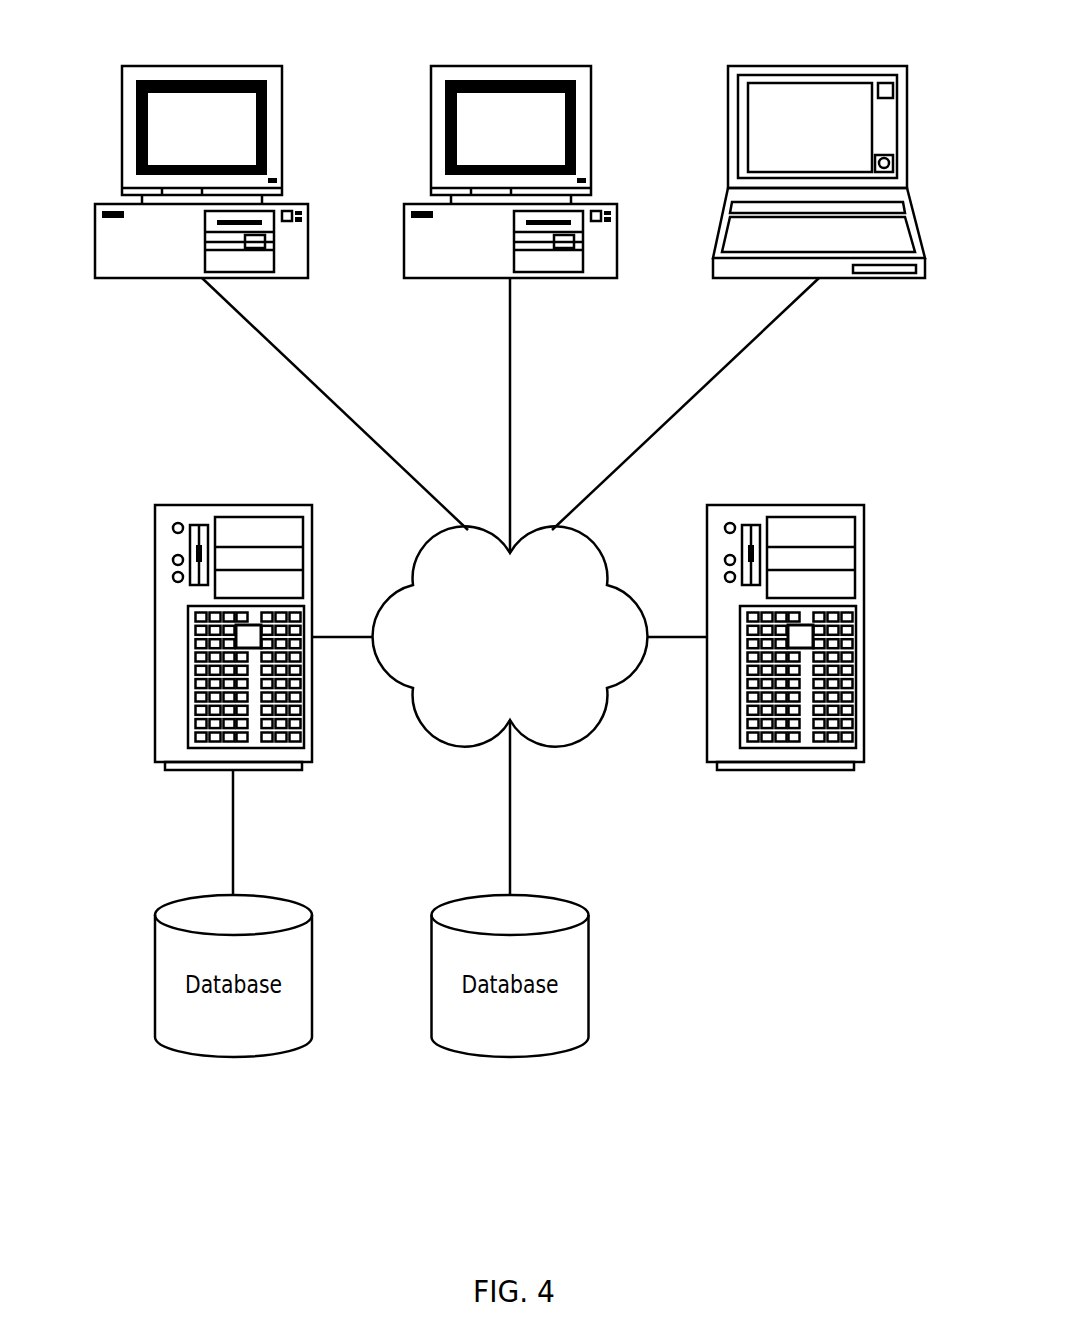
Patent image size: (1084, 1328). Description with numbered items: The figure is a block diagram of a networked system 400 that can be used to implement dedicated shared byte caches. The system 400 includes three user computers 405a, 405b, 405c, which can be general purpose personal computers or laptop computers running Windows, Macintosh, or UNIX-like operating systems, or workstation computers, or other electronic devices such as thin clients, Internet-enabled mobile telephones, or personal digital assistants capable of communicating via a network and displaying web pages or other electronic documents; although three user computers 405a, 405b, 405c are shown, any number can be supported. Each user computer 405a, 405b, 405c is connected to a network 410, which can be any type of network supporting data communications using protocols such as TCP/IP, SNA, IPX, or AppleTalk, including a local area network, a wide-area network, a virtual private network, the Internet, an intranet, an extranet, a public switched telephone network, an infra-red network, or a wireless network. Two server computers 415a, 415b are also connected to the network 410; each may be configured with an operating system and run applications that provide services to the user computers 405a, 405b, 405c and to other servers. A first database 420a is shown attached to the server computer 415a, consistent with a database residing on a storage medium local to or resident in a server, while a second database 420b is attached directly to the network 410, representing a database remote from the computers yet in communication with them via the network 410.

The system 400 is at (510, 583).
The user computer 405a is at (308, 223).
The user computer 405b is at (405, 225).
The user computer 405c is at (728, 172).
The network 410 is at (550, 745).
The server computer 415a is at (155, 637).
The server computer 415b is at (865, 637).
The database 420a is at (233, 1055).
The database 420b is at (510, 1055).